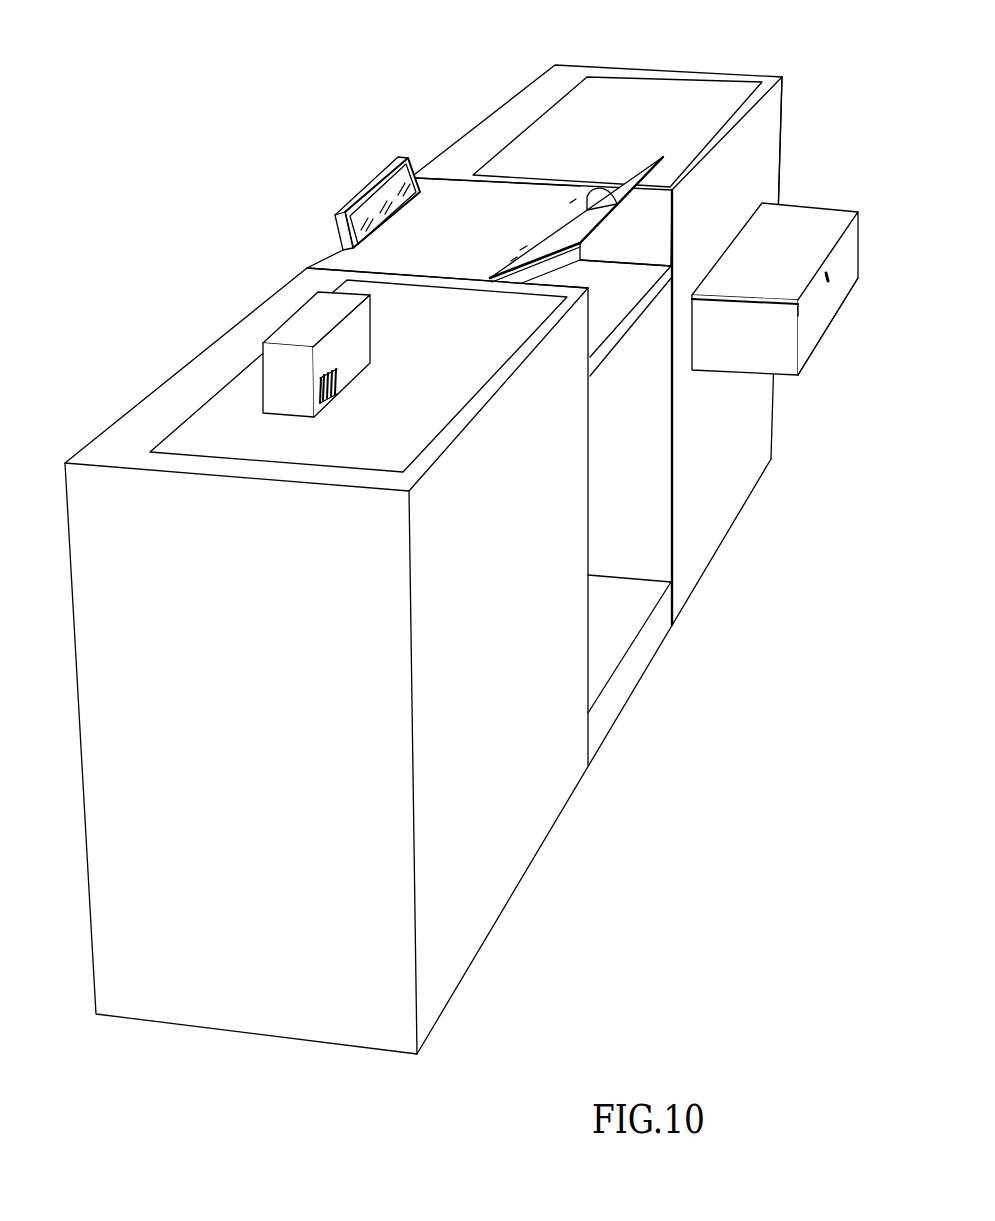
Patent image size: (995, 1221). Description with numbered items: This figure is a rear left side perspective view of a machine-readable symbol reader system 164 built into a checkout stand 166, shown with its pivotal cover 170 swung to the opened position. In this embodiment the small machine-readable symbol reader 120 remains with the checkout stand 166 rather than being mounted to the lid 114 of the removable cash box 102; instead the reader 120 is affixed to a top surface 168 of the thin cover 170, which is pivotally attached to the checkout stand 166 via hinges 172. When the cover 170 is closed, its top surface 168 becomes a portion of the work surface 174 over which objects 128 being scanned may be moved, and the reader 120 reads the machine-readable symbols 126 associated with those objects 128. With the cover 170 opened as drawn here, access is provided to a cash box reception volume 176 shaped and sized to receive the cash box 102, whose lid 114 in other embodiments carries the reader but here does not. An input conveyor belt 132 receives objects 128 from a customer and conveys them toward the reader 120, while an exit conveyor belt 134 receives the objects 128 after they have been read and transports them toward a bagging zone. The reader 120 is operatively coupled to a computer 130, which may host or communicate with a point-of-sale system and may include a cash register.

The machine-readable symbol reader system 164 is at (248, 78).
The checkout stand 166 is at (781, 105).
The input conveyor belt 132 is at (203, 438).
The exit conveyor belt 134 is at (548, 143).
The work surface 174 is at (430, 237).
The top surface of cover 168 is at (630, 180).
The machine-readable symbol reader 120 is at (587, 197).
The hinges 172 is at (512, 252).
The cover 170 is at (671, 150).
The cash box reception volume 176 is at (639, 246).
The lid 114 is at (804, 221).
The cash box 102 is at (837, 336).
The computer 130 is at (355, 192).
The objects 128 is at (310, 322).
The machine-readable symbols 126 is at (317, 397).